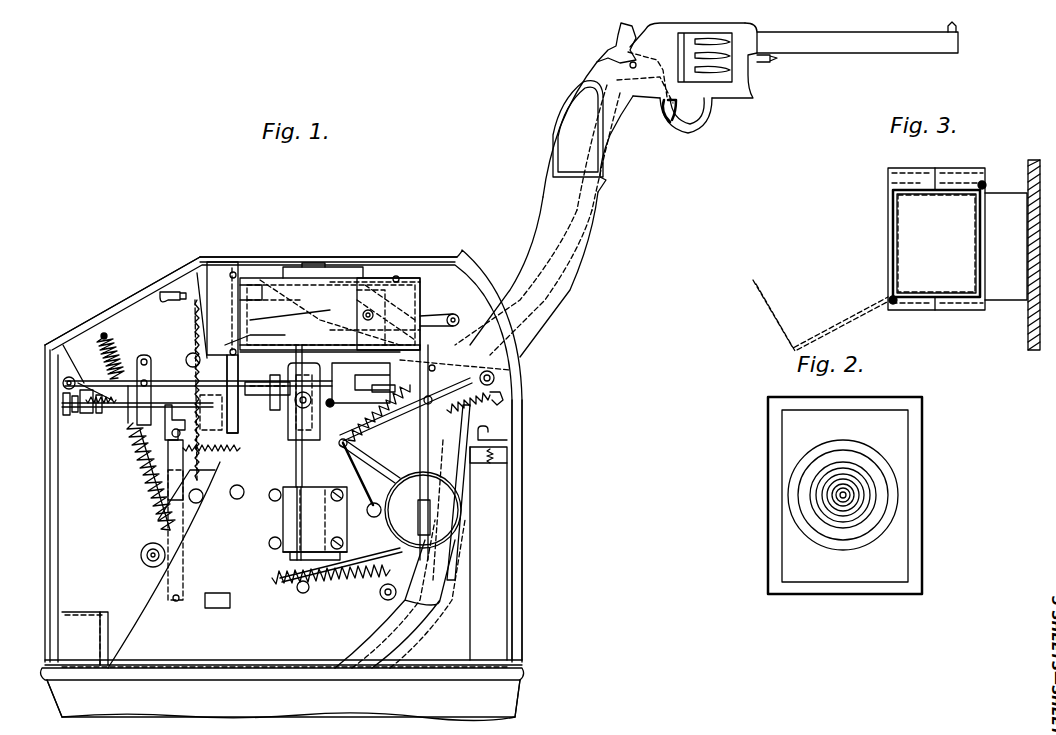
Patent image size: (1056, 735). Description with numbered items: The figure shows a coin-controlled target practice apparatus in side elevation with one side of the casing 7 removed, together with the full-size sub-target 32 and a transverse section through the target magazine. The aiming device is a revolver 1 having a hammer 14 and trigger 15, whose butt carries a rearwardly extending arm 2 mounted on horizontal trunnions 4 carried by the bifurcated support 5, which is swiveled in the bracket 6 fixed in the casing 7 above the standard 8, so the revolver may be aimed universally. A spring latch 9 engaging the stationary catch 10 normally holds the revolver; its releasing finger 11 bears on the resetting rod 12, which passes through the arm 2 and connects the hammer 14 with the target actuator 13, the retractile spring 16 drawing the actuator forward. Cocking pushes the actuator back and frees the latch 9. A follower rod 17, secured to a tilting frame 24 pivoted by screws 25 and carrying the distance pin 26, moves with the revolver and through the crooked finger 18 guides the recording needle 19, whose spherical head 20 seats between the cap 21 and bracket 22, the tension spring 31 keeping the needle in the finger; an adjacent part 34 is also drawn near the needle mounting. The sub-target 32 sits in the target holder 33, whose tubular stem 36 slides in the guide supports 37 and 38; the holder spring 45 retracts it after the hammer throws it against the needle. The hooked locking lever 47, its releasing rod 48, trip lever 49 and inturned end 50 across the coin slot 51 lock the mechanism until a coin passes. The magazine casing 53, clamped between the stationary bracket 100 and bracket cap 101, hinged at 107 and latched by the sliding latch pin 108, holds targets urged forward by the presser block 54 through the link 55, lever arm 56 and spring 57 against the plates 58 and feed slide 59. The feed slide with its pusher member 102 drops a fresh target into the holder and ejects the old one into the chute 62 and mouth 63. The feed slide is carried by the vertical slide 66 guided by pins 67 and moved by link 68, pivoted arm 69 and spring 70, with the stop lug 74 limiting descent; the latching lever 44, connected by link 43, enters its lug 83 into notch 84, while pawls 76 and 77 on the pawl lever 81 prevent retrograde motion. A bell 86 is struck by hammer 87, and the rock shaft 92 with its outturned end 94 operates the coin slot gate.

In FIG. 1, the revolver 1 is at (840, 52).
In FIG. 1, the arm 2 is at (588, 254).
In FIG. 1, the trunnions 4 is at (332, 370).
In FIG. 1, the bifurcated support 5 is at (297, 470).
In FIG. 1, the bracket 6 is at (290, 528).
In FIG. 1, the casing 7 is at (522, 512).
In FIG. 3, the casing 7 is at (1032, 338).
In FIG. 1, the standard 8 is at (505, 690).
In FIG. 1, the spring latch 9 is at (504, 397).
In FIG. 1, the stationary catch 10 is at (508, 437).
In FIG. 1, the releasing finger 11 is at (500, 372).
In FIG. 1, the resetting rod 12 is at (378, 440).
In FIG. 1, the target actuator 13 is at (353, 472).
In FIG. 1, the revolver hammer 14 is at (612, 40).
In FIG. 1, the trigger 15 is at (678, 108).
In FIG. 1, the retractile spring 16 is at (370, 458).
In FIG. 1, the follower rod 17 is at (170, 380).
In FIG. 1, the crooked finger 18 is at (62, 405).
In FIG. 1, the recording needle 19 is at (140, 415).
In FIG. 1, the spherical head 20 is at (78, 410).
In FIG. 1, the removable cap 21 is at (98, 413).
In FIG. 1, the bracket 22 is at (78, 412).
In FIG. 1, the tilting frame 24 is at (376, 397).
In FIG. 1, the pivot screws 25 is at (331, 406).
In FIG. 1, the distance pin 26 is at (379, 410).
In FIG. 1, the tension spring 31 is at (112, 398).
In FIG. 3, the sub-target 32 is at (925, 260).
In FIG. 2, the sub-target 32 is at (908, 440).
In FIG. 1, the target holder 33 is at (228, 380).
In FIG. 1, the spring 34 is at (140, 452).
In FIG. 1, the tubular stem 36 is at (288, 400).
In FIG. 1, the guide support 37 is at (270, 420).
In FIG. 1, the guide support 38 is at (276, 375).
In FIG. 1, the link 43 is at (209, 412).
In FIG. 1, the feed latching and tripping lever 44 is at (160, 490).
In FIG. 1, the sub-target holder spring 45 is at (260, 382).
In FIG. 1, the locking lever 47 is at (330, 316).
In FIG. 1, the releasing rod 48 is at (283, 515).
In FIG. 1, the trip lever 49 is at (370, 558).
In FIG. 1, the inturned end 50 is at (450, 530).
In FIG. 1, the coin slot 51 is at (452, 600).
In FIG. 1, the magazine casing 53 is at (330, 300).
In FIG. 1, the presser block 54 is at (421, 294).
In FIG. 1, the link 55 is at (460, 316).
In FIG. 1, the lever arm 56 is at (458, 472).
In FIG. 1, the tension spring 57 is at (378, 590).
In FIG. 1, the plates 58 is at (207, 333).
In FIG. 1, the target feed slide 59 is at (200, 262).
In FIG. 1, the chute 62 is at (158, 628).
In FIG. 1, the mouth 63 is at (62, 643).
In FIG. 1, the vertical slide 66 is at (255, 335).
In FIG. 1, the guiding pins 67 is at (190, 500).
In FIG. 1, the link 68 is at (205, 530).
In FIG. 1, the pivoted arm 69 is at (141, 550).
In FIG. 1, the tension spring 70 is at (130, 478).
In FIG. 1, the stop lug 74 is at (222, 605).
In FIG. 1, the pawl 76 is at (178, 462).
In FIG. 1, the pawl 77 is at (172, 425).
In FIG. 1, the pawl lever 81 is at (211, 442).
In FIG. 1, the lug 83 is at (158, 518).
In FIG. 1, the notch 84 is at (252, 484).
In FIG. 1, the bell 86 is at (462, 512).
In FIG. 1, the hammer 87 is at (370, 514).
In FIG. 1, the rock shaft 92 is at (290, 268).
In FIG. 1, the outturned end 94 is at (245, 275).
In FIG. 3, the stationary bracket 100 is at (1008, 290).
In FIG. 1, the bracket cap 101 is at (220, 288).
In FIG. 3, the bracket cap 101 is at (893, 230).
In FIG. 1, the pusher member 102 is at (160, 296).
In FIG. 3, the hinge 107 is at (898, 303).
In FIG. 1, the sliding latch pin 108 is at (398, 278).
In FIG. 3, the sliding latch pin 108 is at (988, 180).